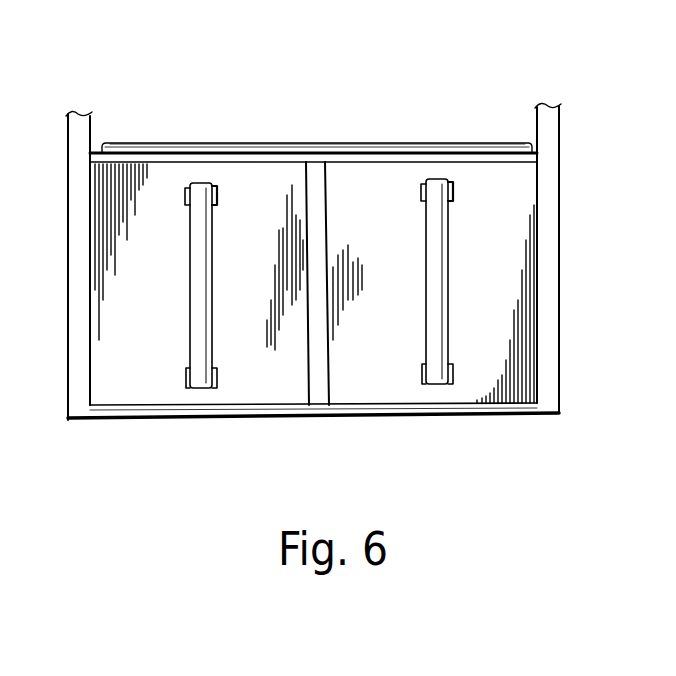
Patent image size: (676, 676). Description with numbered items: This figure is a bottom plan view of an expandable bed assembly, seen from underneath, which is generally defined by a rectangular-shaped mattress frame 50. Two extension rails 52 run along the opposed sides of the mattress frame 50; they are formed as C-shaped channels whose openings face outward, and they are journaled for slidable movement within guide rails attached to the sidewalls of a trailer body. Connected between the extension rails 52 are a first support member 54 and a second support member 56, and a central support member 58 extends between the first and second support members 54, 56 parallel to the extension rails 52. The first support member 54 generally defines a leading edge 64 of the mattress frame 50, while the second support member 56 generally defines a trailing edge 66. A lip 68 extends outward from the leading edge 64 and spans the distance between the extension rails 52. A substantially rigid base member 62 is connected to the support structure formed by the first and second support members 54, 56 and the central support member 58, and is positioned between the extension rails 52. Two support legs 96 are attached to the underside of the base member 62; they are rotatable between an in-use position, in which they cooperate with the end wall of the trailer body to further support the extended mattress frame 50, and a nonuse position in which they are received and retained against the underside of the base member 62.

The mattress frame 50 is at (557, 242).
The extension rails 52 is at (70, 378).
The first support member 54 is at (327, 156).
The second support member 56 is at (512, 408).
The central support member 58 is at (318, 342).
The base member 62 is at (175, 302).
The leading edge 64 is at (345, 143).
The trailing edge 66 is at (424, 413).
The lip 68 is at (207, 145).
The support legs 96 is at (252, 242).